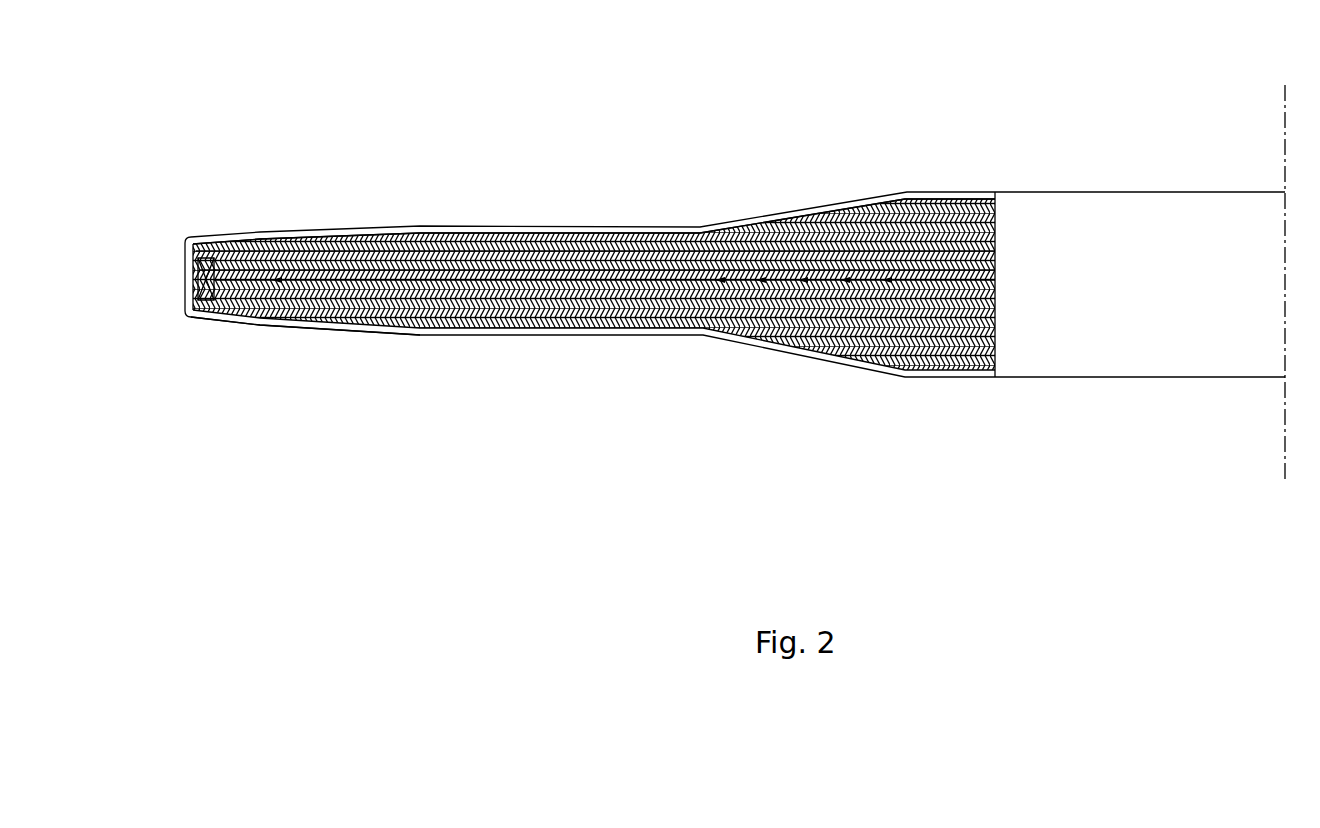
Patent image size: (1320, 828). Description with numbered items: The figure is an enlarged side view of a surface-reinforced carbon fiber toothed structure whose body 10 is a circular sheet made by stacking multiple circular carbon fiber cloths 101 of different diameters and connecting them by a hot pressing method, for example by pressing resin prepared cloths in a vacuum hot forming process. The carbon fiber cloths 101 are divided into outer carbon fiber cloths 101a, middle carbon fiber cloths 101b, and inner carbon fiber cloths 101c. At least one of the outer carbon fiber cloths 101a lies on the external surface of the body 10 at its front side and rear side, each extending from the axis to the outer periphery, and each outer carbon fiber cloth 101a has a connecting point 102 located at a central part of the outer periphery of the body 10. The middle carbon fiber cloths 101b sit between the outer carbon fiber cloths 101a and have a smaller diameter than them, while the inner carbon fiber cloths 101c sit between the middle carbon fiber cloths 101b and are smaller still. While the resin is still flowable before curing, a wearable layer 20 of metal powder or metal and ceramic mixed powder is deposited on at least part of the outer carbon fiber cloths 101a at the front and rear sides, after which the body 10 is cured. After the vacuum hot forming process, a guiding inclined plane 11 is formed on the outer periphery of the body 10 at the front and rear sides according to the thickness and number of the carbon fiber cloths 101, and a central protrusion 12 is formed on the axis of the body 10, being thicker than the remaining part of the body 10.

The body 10 is at (554, 258).
The guiding inclined plane 11 is at (296, 343).
The central protrusion 12 is at (1082, 176).
The wearable layer 20 is at (750, 222).
The carbon fiber cloths 101 is at (554, 286).
The outer carbon fiber cloths 101a is at (218, 243).
The middle carbon fiber cloths 101b is at (255, 257).
The inner carbon fiber cloths 101c is at (346, 281).
The connecting point 102 is at (200, 279).